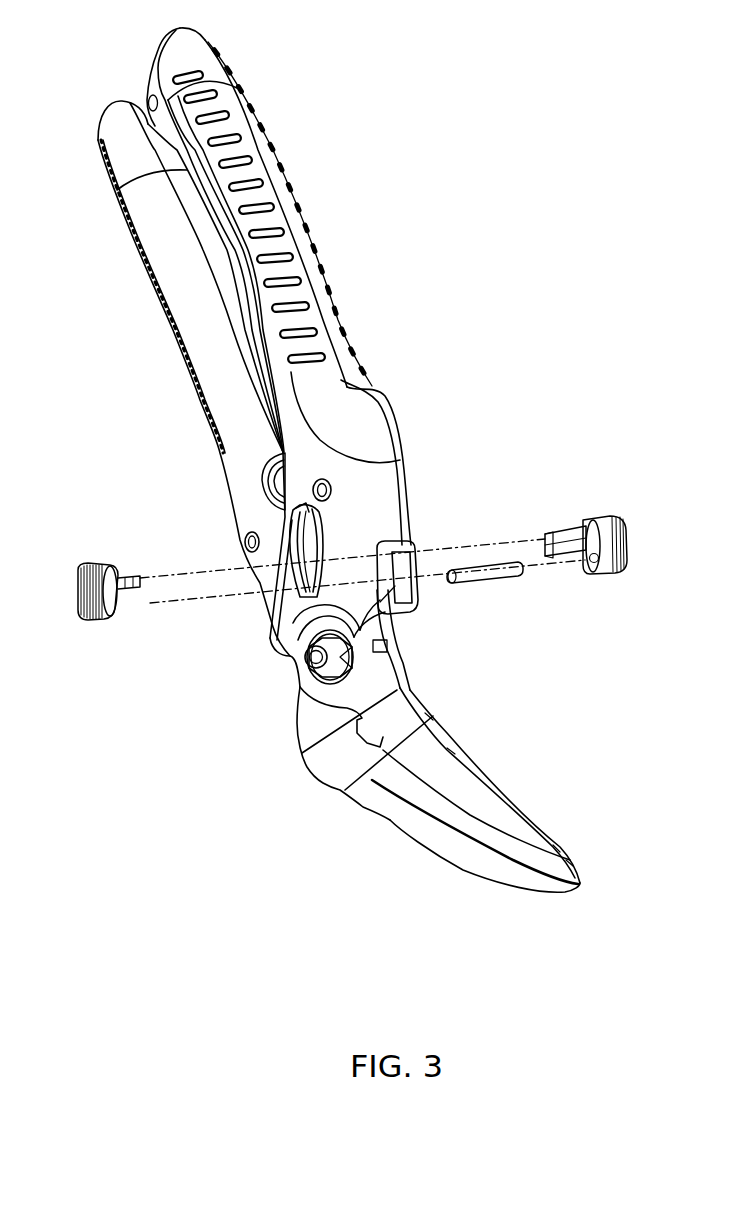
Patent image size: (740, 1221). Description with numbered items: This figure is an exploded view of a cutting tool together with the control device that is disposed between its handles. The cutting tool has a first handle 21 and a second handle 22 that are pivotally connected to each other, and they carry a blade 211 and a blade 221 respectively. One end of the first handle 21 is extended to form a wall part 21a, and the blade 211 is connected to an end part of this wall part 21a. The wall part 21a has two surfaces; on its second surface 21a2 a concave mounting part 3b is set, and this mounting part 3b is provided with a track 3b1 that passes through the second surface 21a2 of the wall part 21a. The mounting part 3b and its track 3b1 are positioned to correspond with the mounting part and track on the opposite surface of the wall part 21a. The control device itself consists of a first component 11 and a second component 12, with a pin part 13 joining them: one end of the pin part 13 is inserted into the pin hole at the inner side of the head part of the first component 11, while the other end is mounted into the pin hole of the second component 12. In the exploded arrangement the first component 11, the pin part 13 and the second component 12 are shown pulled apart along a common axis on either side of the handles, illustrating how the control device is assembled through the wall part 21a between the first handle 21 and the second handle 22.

The first handle 21 is at (281, 193).
The second handle 22 is at (172, 290).
The wall part 21a is at (383, 450).
The second surface 21a2 is at (327, 467).
The mounting part 3b is at (283, 537).
The track 3b1 is at (302, 515).
The first component 11 is at (121, 624).
The second component 12 is at (570, 512).
The pin part 13 is at (500, 578).
The blade 221 is at (513, 805).
The blade 211 is at (463, 858).